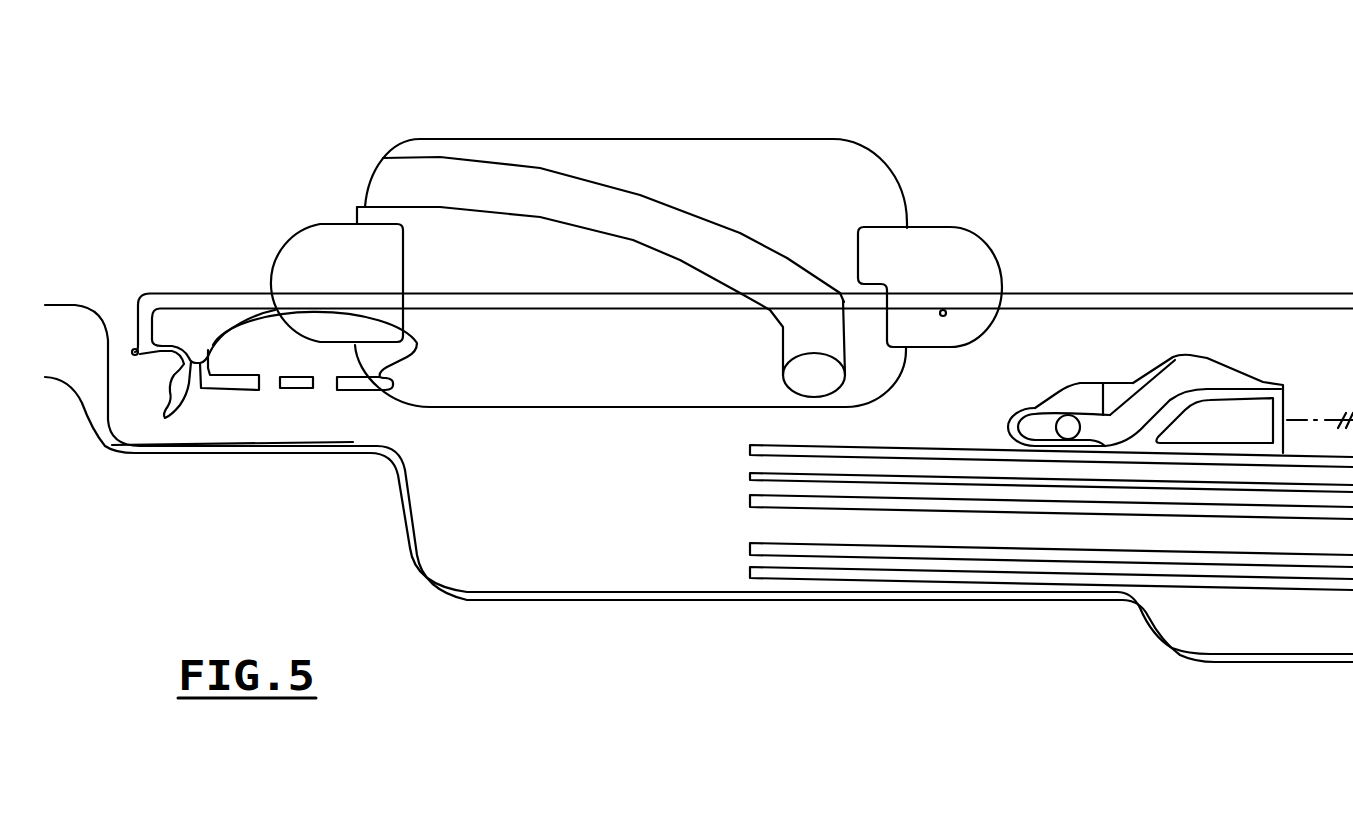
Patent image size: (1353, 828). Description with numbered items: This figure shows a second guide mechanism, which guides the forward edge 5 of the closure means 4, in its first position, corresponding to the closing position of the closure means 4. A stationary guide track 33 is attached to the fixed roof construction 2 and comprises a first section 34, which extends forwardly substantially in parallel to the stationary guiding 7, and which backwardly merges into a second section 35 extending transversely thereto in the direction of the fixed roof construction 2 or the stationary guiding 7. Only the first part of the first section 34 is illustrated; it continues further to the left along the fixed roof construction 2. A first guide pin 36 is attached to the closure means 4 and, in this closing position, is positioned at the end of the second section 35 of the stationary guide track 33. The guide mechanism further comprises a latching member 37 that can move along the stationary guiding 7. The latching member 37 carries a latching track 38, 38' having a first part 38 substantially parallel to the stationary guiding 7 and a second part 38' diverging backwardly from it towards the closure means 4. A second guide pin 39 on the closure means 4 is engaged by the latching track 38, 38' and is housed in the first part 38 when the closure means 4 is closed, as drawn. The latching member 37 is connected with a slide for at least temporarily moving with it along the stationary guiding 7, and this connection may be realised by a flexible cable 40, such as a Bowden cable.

The fixed roof construction 2 is at (234, 447).
The closure means 4 is at (1108, 305).
The forward edge 5 is at (200, 312).
The stationary guiding 7 is at (963, 548).
The stationary guide track 33 is at (571, 166).
The first section 34 is at (393, 207).
The second section 35 is at (632, 241).
The first guide pin 36 is at (818, 367).
The latching member 37 is at (1170, 368).
The first part of latching track 38 is at (1060, 257).
The second part of latching track 38' is at (1174, 534).
The second guide pin 39 is at (1065, 415).
The flexible cable 40 is at (1331, 420).